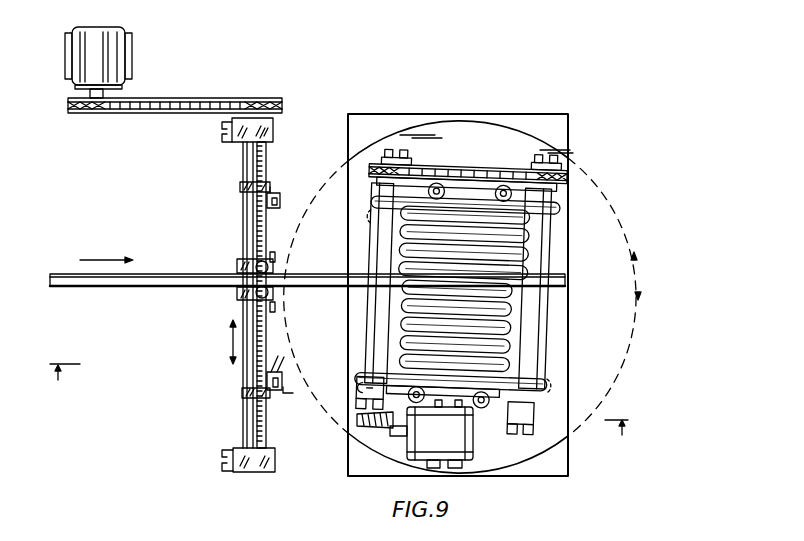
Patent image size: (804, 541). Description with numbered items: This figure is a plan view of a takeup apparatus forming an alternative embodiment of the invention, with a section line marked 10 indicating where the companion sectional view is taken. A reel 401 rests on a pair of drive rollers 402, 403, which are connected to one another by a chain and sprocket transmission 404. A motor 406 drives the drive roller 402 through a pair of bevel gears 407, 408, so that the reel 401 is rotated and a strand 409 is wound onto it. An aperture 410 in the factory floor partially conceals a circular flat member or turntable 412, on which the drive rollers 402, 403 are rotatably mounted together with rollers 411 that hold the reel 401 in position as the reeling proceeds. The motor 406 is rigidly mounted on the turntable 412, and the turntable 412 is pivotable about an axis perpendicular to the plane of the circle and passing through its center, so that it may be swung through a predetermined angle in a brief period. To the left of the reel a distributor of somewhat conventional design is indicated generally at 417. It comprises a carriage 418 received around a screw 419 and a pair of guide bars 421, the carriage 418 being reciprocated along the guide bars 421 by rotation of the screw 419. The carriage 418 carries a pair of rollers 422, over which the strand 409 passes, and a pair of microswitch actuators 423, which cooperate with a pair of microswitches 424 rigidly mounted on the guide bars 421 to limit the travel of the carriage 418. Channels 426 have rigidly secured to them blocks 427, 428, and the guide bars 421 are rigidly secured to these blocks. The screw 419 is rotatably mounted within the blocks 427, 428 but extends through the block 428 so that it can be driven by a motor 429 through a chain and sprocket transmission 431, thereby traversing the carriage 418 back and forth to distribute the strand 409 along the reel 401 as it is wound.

The reel 401 is at (557, 216).
The drive roller 402 is at (364, 342).
The drive roller 403 is at (549, 326).
The chain and sprocket transmission 404 is at (499, 172).
The motor 406 is at (474, 452).
The bevel gear 407 is at (357, 427).
The bevel gear 408 is at (386, 441).
The strand 409 is at (180, 288).
The aperture 410 is at (563, 459).
The rollers 411 is at (492, 191).
The turntable 412 is at (624, 337).
The distributor 417 is at (196, 345).
The carriage 418 is at (238, 267).
The screw 419 is at (263, 174).
The guide bars 421 is at (243, 160).
The rollers 422 is at (268, 256).
The microswitch actuators 423 is at (276, 253).
The microswitches 424 is at (280, 206).
The channels 426 is at (228, 122).
The block 427 is at (263, 472).
The block 428 is at (274, 128).
The motor 429 is at (128, 46).
The chain and sprocket transmission 431 is at (165, 98).
The section line 10 is at (338, 409).